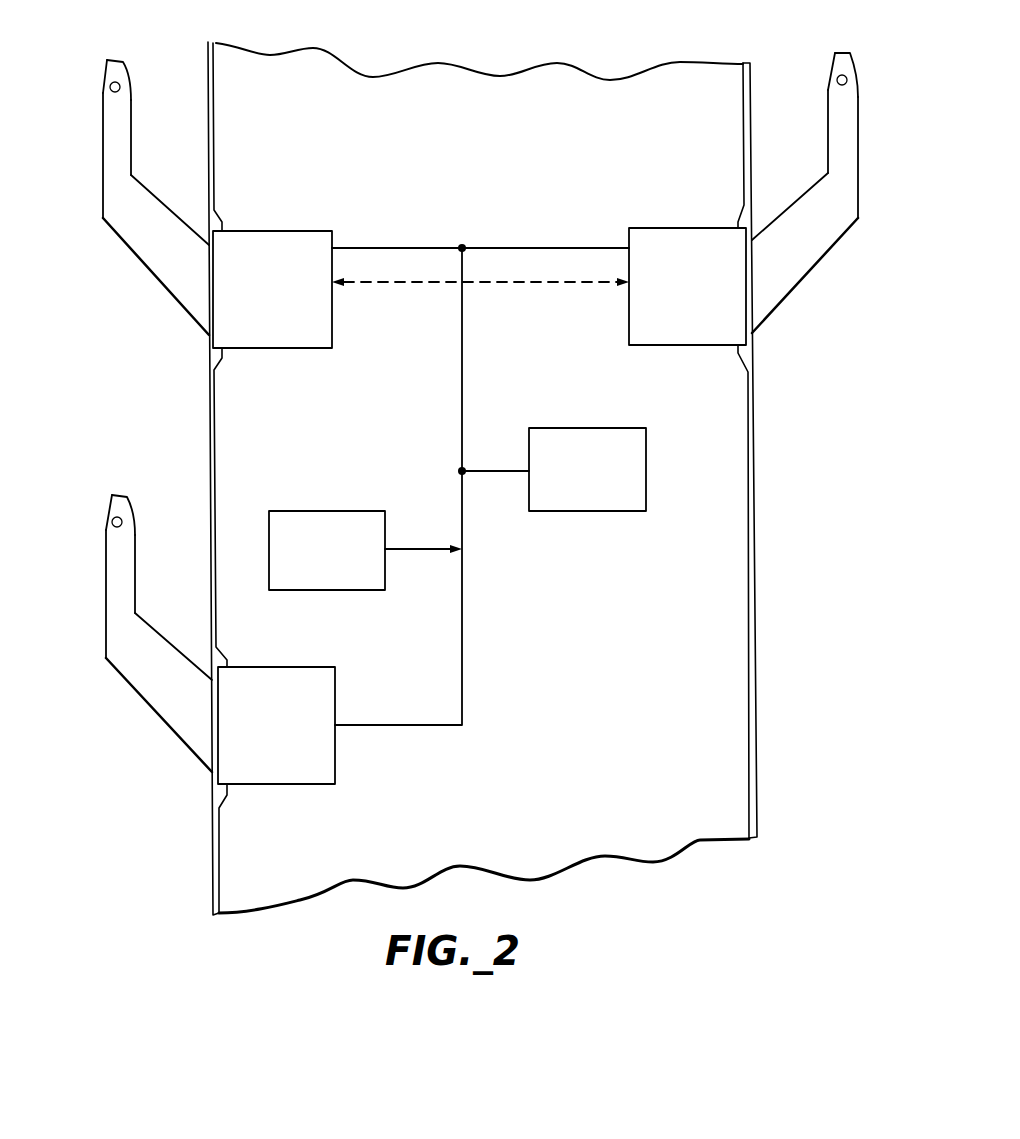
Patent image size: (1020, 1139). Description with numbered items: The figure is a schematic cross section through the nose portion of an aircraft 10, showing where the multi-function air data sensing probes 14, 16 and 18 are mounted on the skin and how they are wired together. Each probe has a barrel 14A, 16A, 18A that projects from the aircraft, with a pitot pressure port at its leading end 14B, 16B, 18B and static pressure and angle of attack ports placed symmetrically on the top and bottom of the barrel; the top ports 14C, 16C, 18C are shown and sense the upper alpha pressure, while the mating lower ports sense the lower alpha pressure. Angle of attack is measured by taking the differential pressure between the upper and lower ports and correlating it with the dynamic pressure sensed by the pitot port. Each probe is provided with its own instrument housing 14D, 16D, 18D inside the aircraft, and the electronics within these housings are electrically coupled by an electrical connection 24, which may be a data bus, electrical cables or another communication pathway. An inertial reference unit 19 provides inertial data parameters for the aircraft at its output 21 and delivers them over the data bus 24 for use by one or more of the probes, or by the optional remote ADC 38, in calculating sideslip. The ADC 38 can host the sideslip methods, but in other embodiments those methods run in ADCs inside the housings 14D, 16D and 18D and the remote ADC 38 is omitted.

The aircraft 10 is at (770, 583).
The air data sensing probe 14 is at (148, 259).
The barrel 14A is at (132, 155).
The pitot pressure port 14B is at (116, 58).
The top port 14C is at (122, 85).
The instrument housing 14D is at (257, 245).
The air data sensing probe 16 is at (810, 253).
The barrel 16A is at (828, 150).
The pitot pressure port 16B is at (838, 52).
The top port 16C is at (837, 82).
The instrument housing 16D is at (702, 240).
The air data sensing probe 18 is at (152, 696).
The barrel 18A is at (135, 592).
The pitot pressure port 18B is at (118, 493).
The top port 18C is at (128, 520).
The instrument housing 18D is at (260, 680).
The inertial reference unit 19 is at (333, 510).
The output 21 is at (510, 283).
The electrical connection 24 is at (465, 665).
The remote ADC 38 is at (610, 427).